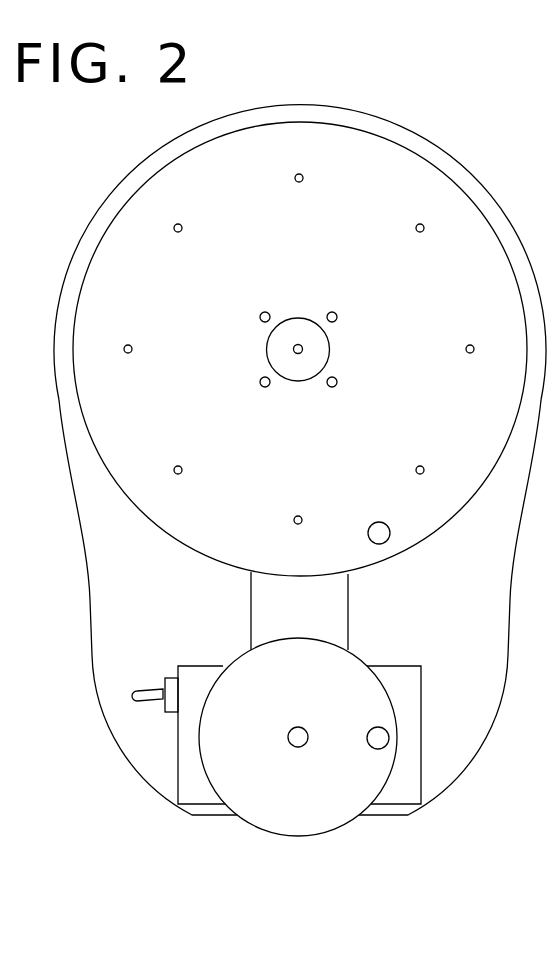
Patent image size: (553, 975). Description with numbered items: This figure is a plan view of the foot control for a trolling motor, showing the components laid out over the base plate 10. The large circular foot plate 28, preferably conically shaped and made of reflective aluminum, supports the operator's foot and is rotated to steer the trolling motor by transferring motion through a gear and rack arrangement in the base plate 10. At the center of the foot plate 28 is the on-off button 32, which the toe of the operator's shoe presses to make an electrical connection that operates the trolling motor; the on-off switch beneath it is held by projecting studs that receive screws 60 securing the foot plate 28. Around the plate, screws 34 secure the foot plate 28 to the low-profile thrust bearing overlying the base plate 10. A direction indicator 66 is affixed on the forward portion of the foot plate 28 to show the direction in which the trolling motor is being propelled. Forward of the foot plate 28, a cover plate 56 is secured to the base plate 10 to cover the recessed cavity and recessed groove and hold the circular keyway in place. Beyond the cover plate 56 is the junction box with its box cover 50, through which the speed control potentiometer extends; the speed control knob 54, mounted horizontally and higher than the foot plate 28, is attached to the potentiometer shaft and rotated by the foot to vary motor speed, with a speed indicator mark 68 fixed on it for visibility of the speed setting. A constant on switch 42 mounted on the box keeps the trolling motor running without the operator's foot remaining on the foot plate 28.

The base plate 10 is at (457, 710).
The foot plate 28 is at (455, 475).
The on-off button 32 is at (297, 368).
The screws 34 is at (468, 345).
The constant on switch 42 is at (172, 690).
The box cover 50 is at (400, 782).
The speed control knob 54 is at (308, 793).
The cover plate 56 is at (268, 623).
The screws 60 is at (265, 313).
The direction indicator 66 is at (380, 533).
The speed indicator mark 68 is at (372, 735).